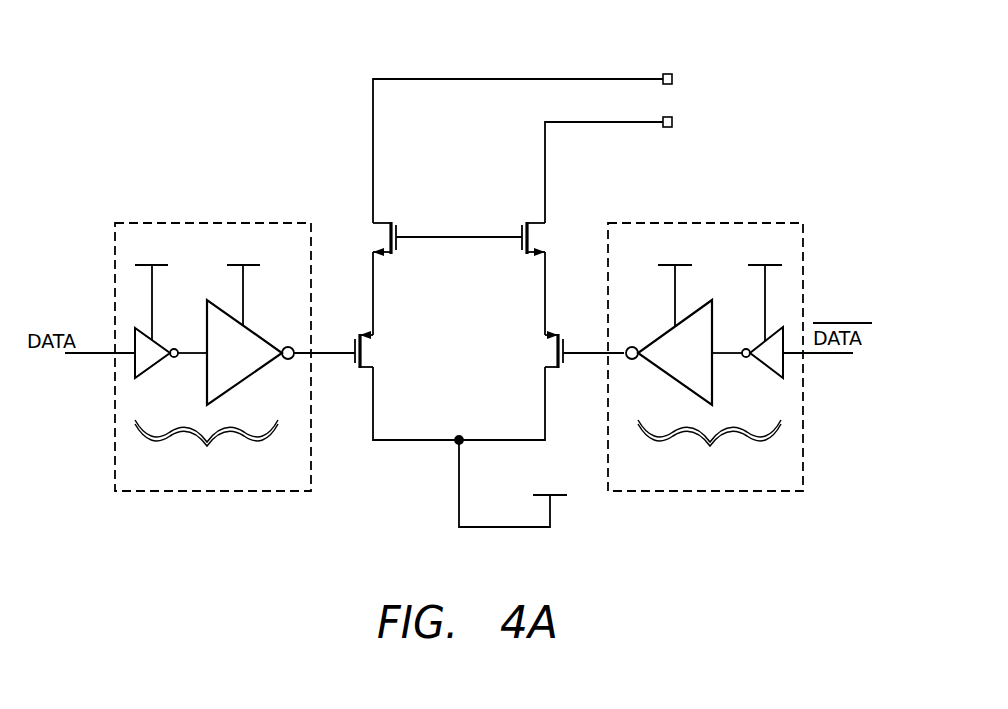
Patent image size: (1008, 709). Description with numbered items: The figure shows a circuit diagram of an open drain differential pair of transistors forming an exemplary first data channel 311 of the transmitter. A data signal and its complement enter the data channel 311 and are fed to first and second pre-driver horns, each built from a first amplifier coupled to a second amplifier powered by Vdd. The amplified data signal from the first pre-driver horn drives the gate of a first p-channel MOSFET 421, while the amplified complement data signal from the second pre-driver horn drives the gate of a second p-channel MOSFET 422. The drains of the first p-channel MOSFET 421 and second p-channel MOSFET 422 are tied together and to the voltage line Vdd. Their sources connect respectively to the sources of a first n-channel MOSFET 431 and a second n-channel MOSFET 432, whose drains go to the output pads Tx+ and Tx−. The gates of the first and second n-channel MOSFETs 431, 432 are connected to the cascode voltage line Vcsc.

The first data channel 311 is at (333, 85).
The first p-channel MOSFET 421 is at (367, 365).
The second p-channel MOSFET 422 is at (551, 365).
The first n-channel MOSFET 431 is at (379, 222).
The second n-channel MOSFET 432 is at (540, 222).